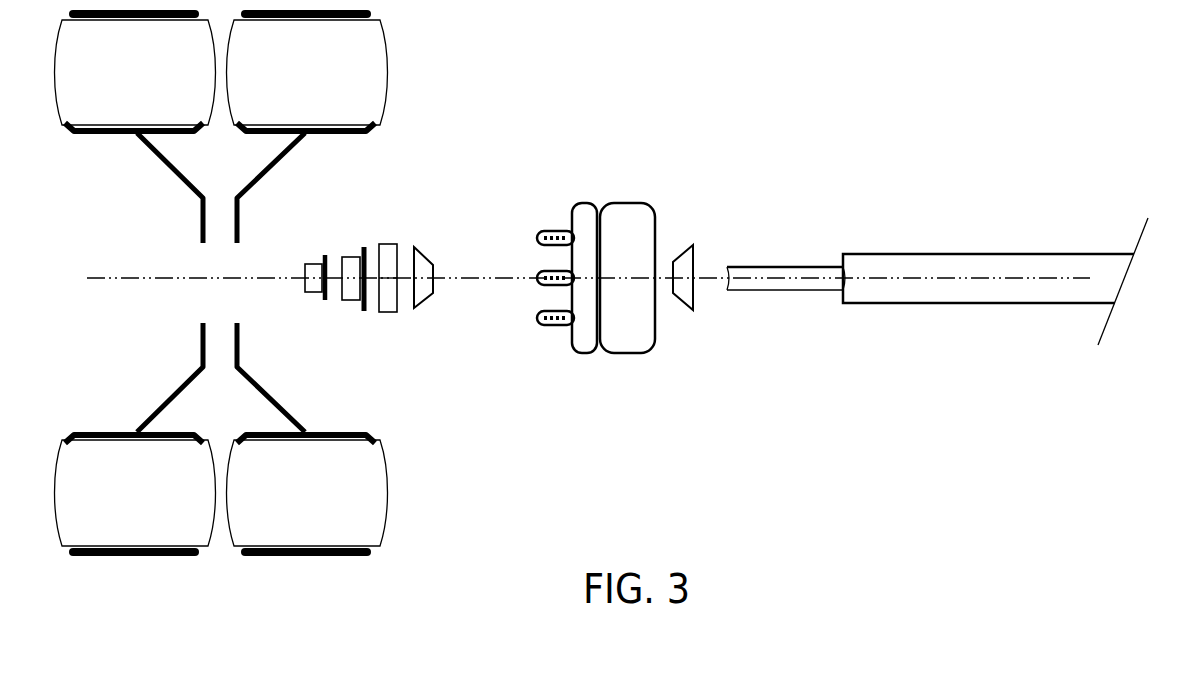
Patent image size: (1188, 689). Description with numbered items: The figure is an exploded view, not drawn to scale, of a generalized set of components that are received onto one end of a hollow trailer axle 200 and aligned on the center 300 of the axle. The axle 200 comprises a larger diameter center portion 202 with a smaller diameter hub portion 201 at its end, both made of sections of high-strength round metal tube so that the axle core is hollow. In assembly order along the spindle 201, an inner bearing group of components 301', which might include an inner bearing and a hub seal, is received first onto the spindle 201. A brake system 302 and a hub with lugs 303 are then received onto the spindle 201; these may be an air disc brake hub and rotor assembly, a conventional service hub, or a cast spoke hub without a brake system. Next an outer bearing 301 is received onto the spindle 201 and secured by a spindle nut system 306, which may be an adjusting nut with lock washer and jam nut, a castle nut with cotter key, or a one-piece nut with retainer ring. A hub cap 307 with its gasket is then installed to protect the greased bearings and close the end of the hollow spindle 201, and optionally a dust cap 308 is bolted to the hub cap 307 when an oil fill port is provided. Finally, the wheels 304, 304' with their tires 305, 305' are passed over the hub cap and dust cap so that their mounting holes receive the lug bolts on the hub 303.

The hollow trailer axle 200 is at (937, 238).
The hub portion 201 is at (786, 253).
The center portion 202 is at (988, 256).
The center of the axle 300 is at (1089, 263).
The outer bearing 301 is at (403, 316).
The inner bearing group of components 301' is at (707, 250).
The brake system 302 is at (646, 252).
The hub with lugs 303 is at (582, 252).
The wheel 304 is at (169, 284).
The wheel 304' is at (278, 282).
The tire 305 is at (135, 283).
The tire 305' is at (307, 283).
The spindle nut system 306 is at (370, 301).
The hub cap 307 is at (324, 312).
The dust cap 308 is at (295, 299).